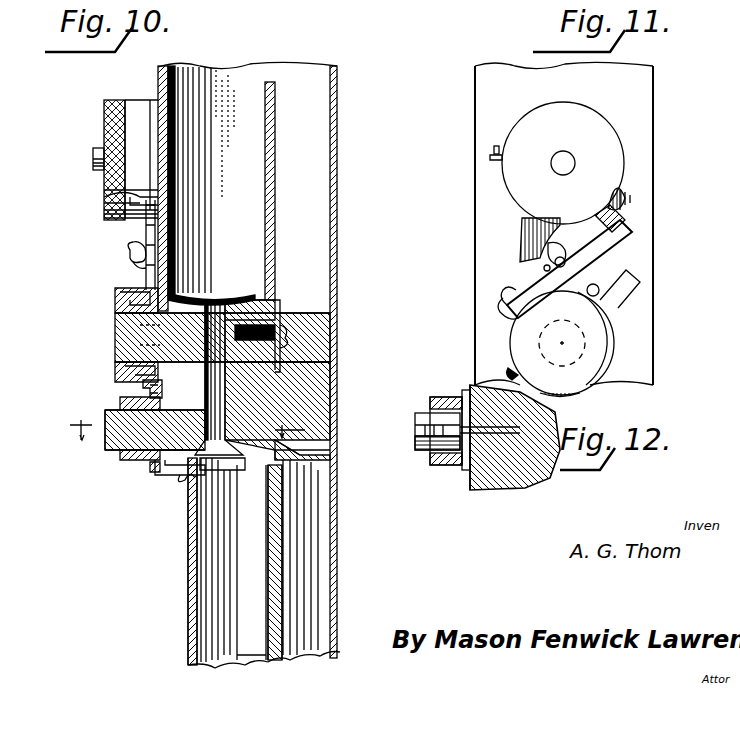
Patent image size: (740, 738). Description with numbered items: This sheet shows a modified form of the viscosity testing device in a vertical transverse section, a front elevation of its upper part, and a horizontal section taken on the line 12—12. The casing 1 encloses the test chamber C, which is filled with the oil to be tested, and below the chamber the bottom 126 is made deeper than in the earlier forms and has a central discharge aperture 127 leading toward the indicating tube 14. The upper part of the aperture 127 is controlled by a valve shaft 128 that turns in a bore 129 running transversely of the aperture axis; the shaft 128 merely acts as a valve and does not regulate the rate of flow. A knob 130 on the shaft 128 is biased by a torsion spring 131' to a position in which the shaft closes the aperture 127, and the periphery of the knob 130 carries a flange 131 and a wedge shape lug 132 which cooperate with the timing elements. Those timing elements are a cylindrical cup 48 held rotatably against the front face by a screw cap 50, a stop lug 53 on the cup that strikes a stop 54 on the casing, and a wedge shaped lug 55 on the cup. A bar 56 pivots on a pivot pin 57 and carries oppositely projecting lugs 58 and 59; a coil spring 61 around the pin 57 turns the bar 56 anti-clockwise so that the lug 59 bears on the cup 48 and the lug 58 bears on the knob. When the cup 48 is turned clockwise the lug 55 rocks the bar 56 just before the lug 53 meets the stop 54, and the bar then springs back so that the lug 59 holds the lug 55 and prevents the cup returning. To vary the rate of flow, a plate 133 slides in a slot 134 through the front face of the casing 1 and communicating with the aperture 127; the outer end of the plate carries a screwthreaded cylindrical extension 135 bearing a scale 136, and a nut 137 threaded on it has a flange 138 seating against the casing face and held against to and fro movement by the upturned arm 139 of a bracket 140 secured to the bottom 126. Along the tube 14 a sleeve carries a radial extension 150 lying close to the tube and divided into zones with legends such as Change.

In FIG. 10, the casing 1 is at (337, 145).
In FIG. 10, the test chamber C is at (252, 186).
In FIG. 10, the section line 12 is at (187, 420).
In FIG. 10, the indicating tube 14 is at (190, 590).
In FIG. 10, the cylindrical cup 48 is at (125, 100).
In FIG. 11, the cylindrical cup 48 is at (505, 126).
In FIG. 10, the screw cap 50 is at (93, 160).
In FIG. 11, the screw cap 50 is at (551, 165).
In FIG. 11, the stop lug 53 is at (490, 157).
In FIG. 11, the stop 54 is at (494, 150).
In FIG. 10, the wedge shaped lug 55 is at (130, 188).
In FIG. 11, the wedge shaped lug 55 is at (618, 185).
In FIG. 10, the bar 56 is at (133, 246).
In FIG. 11, the bar 56 is at (535, 265).
In FIG. 11, the pivot pin 57 is at (545, 248).
In FIG. 11, the lug 58 is at (500, 302).
In FIG. 11, the lug 59 is at (620, 215).
In FIG. 11, the coil spring 61 is at (566, 266).
In FIG. 10, the bottom 126 is at (285, 390).
In FIG. 10, the central discharge aperture 127 is at (218, 385).
In FIG. 10, the valve shaft 128 is at (248, 318).
In FIG. 10, the bore 129 is at (196, 287).
In FIG. 10, the knob 130 is at (115, 345).
In FIG. 10, the flange 131 is at (127, 389).
In FIG. 11, the flange 131 is at (599, 333).
In FIG. 10, the torsion spring 131' is at (106, 339).
In FIG. 11, the wedge shape lug 132 is at (508, 370).
In FIG. 10, the plate 133 is at (105, 440).
In FIG. 12, the plate 133 is at (500, 490).
In FIG. 12, the slot 134 is at (470, 475).
In FIG. 12, the screwthreaded cylindrical extension 135 is at (420, 450).
In FIG. 12, the scale 136 is at (415, 430).
In FIG. 12, the nut 137 is at (430, 400).
In FIG. 10, the flange 138 is at (120, 460).
In FIG. 12, the flange 138 is at (465, 390).
In FIG. 10, the upturned arm 139 is at (155, 470).
In FIG. 10, the bracket 140 is at (175, 480).
In FIG. 10, the radial extension 150 is at (268, 540).